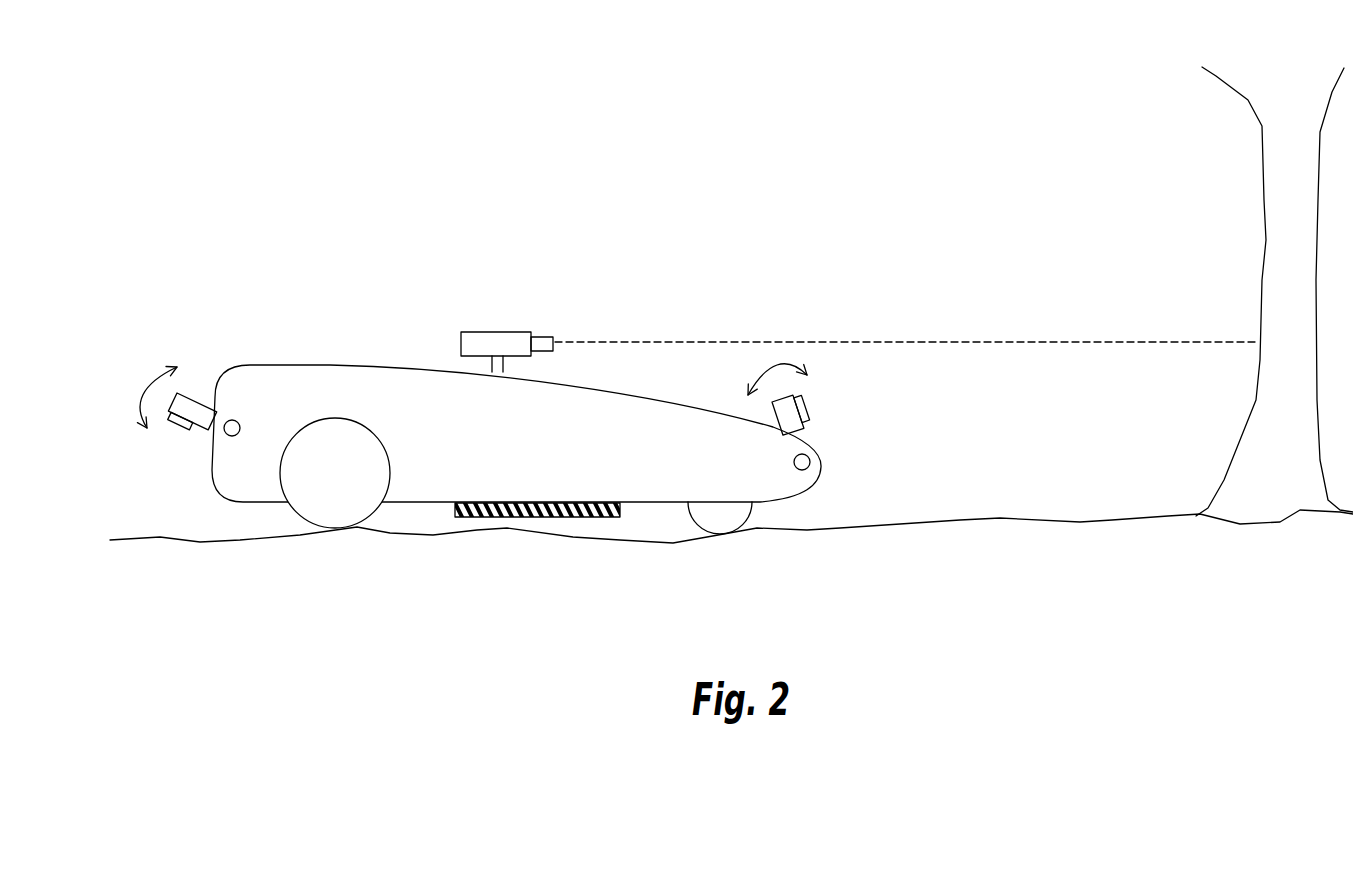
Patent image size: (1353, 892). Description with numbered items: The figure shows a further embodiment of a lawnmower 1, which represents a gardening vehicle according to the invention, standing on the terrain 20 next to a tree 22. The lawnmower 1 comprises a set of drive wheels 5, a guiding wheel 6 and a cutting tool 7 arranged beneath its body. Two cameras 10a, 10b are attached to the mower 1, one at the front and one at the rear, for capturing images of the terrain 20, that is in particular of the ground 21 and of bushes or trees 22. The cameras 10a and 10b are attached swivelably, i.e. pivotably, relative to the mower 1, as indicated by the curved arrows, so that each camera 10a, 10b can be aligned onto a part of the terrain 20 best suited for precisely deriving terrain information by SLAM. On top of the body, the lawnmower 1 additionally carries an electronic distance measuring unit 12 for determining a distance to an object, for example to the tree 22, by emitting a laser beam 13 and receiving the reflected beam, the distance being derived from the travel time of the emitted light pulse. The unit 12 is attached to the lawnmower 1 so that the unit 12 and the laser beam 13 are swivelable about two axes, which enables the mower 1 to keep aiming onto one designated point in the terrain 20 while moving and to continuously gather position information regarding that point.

The lawnmower 1 is at (305, 325).
The drive wheels 5 is at (317, 497).
The guiding wheel 6 is at (720, 518).
The cutting tool 7 is at (530, 508).
The camera 10a is at (790, 410).
The camera 10b is at (185, 410).
The electronic distance measuring unit 12 is at (498, 335).
The laser beam 13 is at (857, 342).
The terrain 20 is at (958, 192).
The ground 21 is at (1110, 520).
The tree 22 is at (1256, 410).